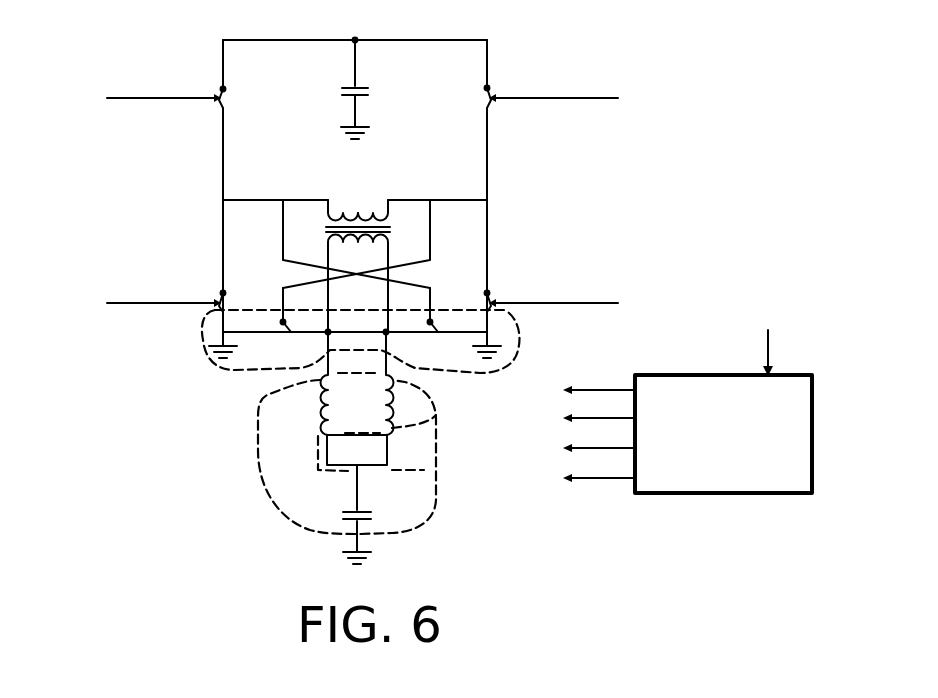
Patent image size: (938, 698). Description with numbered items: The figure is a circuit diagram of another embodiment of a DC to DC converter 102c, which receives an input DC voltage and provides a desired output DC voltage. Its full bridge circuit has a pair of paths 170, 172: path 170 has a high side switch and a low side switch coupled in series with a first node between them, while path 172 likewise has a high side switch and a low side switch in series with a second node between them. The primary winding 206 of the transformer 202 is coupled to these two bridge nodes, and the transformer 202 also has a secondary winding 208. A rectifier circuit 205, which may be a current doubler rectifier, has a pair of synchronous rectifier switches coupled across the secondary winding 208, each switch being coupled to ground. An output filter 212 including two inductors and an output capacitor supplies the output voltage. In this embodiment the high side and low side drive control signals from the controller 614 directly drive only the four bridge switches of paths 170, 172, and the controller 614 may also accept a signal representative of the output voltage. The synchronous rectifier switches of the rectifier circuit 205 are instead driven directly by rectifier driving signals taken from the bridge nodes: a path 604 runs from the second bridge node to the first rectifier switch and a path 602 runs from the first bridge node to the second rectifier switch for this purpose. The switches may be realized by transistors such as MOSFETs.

The DC to DC converter 102c is at (458, 282).
The path 170 is at (207, 163).
The path 172 is at (504, 173).
The transformer 202 is at (316, 207).
The primary winding 206 is at (384, 206).
The secondary winding 208 is at (378, 250).
The path 602 is at (283, 232).
The path 604 is at (431, 232).
The rectifier circuit 205 is at (203, 345).
The output filter 212 is at (263, 472).
The controller 614 is at (813, 420).